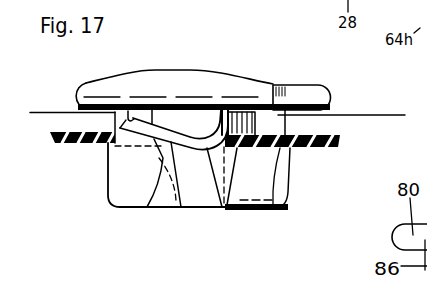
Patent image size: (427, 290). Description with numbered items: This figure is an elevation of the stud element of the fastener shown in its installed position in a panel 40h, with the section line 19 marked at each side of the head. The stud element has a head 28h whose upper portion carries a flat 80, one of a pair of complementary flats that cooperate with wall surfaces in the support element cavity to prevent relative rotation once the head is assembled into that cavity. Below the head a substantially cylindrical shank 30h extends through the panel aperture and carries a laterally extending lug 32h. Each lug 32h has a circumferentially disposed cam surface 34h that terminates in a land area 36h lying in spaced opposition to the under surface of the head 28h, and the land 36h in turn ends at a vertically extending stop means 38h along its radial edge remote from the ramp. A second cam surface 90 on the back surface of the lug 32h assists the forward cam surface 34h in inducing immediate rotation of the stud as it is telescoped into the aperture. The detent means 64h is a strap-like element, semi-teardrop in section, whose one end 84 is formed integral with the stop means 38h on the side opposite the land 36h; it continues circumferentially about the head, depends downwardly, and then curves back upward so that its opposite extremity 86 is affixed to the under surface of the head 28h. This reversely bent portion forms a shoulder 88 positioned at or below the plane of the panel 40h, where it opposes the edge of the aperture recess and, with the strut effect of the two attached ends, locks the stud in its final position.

The section line 19- 19 is at (47, 112).
The head 28h is at (204, 71).
The shank 30h is at (195, 209).
The lug 32h is at (286, 187).
The cam surface 34h is at (272, 183).
The land area 36h is at (307, 141).
The stop means 38h is at (282, 123).
The panel 40h is at (62, 145).
The detent means 64h is at (180, 209).
The flat 80 is at (298, 97).
The end of detent means 84 is at (128, 111).
The opposite extremity of detent means 86 is at (223, 113).
The shoulder 88 is at (222, 207).
The cam surface 90 is at (138, 181).